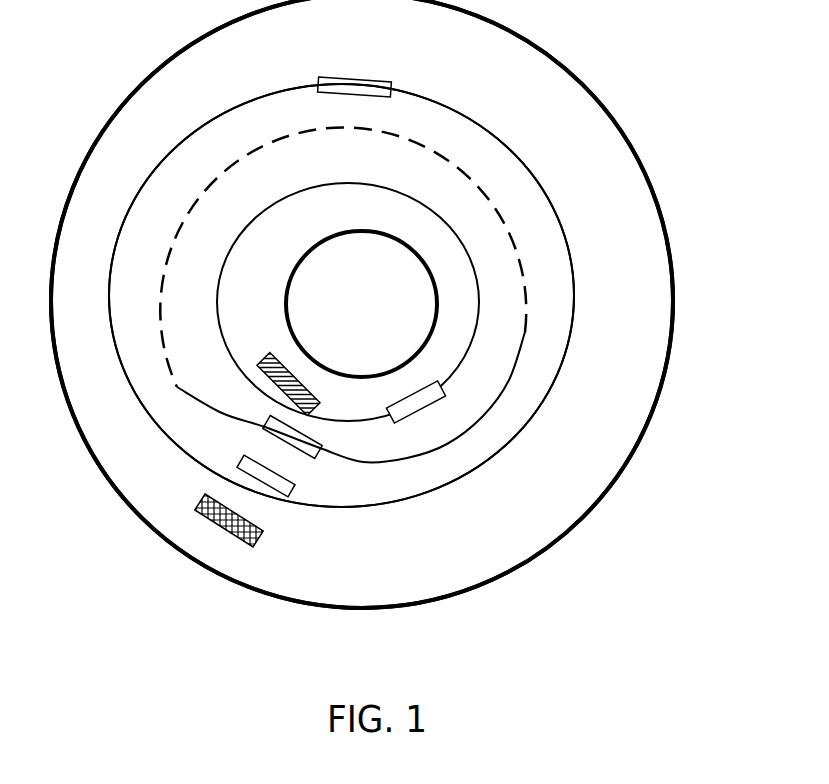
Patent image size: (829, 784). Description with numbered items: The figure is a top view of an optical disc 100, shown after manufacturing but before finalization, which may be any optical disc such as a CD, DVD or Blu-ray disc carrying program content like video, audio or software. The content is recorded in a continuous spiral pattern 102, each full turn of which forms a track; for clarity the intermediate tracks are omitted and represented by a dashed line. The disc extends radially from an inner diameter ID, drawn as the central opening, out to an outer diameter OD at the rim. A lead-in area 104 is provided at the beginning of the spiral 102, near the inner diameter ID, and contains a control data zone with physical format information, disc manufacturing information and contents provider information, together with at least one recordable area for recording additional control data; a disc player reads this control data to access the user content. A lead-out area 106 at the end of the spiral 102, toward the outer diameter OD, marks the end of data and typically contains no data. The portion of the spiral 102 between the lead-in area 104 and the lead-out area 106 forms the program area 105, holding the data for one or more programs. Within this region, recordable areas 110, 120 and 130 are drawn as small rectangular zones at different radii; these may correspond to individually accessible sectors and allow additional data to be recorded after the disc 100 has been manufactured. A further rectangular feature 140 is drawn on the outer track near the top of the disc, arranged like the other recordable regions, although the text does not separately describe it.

The optical disc 100 is at (618, 68).
The continuous spiral pattern 102 is at (496, 124).
The lead-in area 104 is at (267, 357).
The program area 105 is at (577, 283).
The lead-out area 106 is at (260, 543).
The recordable area 110 is at (409, 414).
The recordable area 120 is at (310, 453).
The recordable area 130 is at (282, 492).
The fourth feature 140 is at (371, 78).
The inner diameter ID is at (289, 284).
The outer diameter OD is at (121, 498).